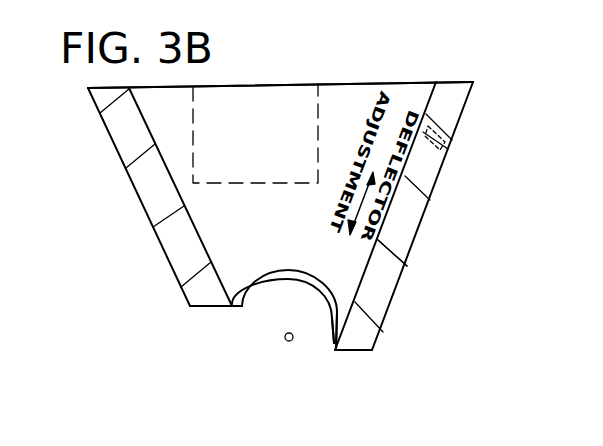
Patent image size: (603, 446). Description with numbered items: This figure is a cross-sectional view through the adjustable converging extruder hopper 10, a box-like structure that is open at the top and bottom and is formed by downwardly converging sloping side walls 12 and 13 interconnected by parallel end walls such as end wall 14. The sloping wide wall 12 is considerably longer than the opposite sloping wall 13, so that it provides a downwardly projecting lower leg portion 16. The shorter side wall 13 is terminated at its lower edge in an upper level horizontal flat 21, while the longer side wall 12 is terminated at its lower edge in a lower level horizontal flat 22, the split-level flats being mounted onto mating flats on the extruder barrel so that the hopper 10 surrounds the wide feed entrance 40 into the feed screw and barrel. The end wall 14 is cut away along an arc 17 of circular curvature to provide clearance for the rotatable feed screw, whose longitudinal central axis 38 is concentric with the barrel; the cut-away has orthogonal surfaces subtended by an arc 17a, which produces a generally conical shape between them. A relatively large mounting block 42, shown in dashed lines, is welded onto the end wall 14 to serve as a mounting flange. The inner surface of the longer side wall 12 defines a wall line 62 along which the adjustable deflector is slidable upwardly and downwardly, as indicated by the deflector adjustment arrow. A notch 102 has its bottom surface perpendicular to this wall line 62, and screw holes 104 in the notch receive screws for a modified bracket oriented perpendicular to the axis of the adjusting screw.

The adjustable converging extruder hopper 10 is at (112, 172).
The side wall 12 is at (410, 223).
The side wall 13 is at (167, 236).
The end wall 14 is at (400, 83).
The lower leg portion 16 is at (371, 331).
The arc 17 is at (291, 283).
The arc 17a is at (330, 307).
The upper level horizontal flat 21 is at (207, 307).
The lower level horizontal flat 22 is at (363, 352).
The longitudinal central axis 38 is at (285, 340).
The feed entrance 40 is at (316, 280).
The mounting block 42 is at (322, 116).
The wall line 62 is at (376, 262).
The notch 102 is at (458, 118).
The screw hole 104 is at (452, 147).